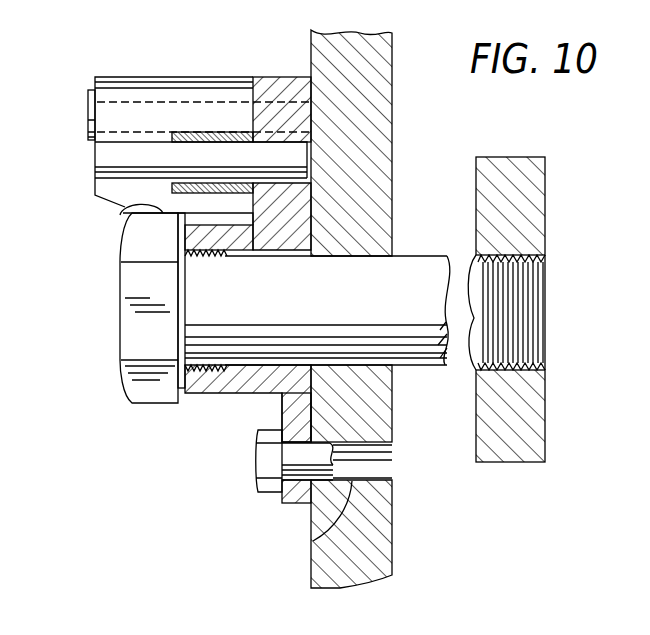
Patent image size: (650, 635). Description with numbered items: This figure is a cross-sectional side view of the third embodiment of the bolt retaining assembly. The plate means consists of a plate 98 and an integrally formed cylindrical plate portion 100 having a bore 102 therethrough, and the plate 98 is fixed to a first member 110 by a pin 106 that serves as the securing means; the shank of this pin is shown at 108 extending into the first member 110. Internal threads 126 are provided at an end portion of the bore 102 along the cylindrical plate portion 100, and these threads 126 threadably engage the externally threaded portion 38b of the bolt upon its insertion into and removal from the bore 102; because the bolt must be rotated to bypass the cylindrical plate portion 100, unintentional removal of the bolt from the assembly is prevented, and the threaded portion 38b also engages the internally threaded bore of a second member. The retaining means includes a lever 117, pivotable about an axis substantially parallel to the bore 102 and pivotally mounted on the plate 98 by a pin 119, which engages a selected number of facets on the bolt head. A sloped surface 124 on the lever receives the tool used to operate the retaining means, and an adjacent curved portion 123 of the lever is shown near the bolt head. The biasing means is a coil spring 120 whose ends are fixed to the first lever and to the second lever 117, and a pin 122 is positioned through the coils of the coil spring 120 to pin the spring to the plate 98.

The externally threaded portion 38b is at (476, 258).
The plate 98 is at (284, 410).
The cylindrical plate portion 100 is at (213, 390).
The bore 102 is at (238, 372).
The pin 106 is at (263, 491).
The bolt shank 108 is at (313, 543).
The first member 110 is at (373, 545).
The lever 117 is at (97, 178).
The pin 119 is at (87, 100).
The coil spring 120 is at (205, 133).
The pin 122 is at (108, 155).
The curved lip 123 is at (125, 205).
The sloped surface 124 is at (99, 198).
The threads 126 is at (197, 375).